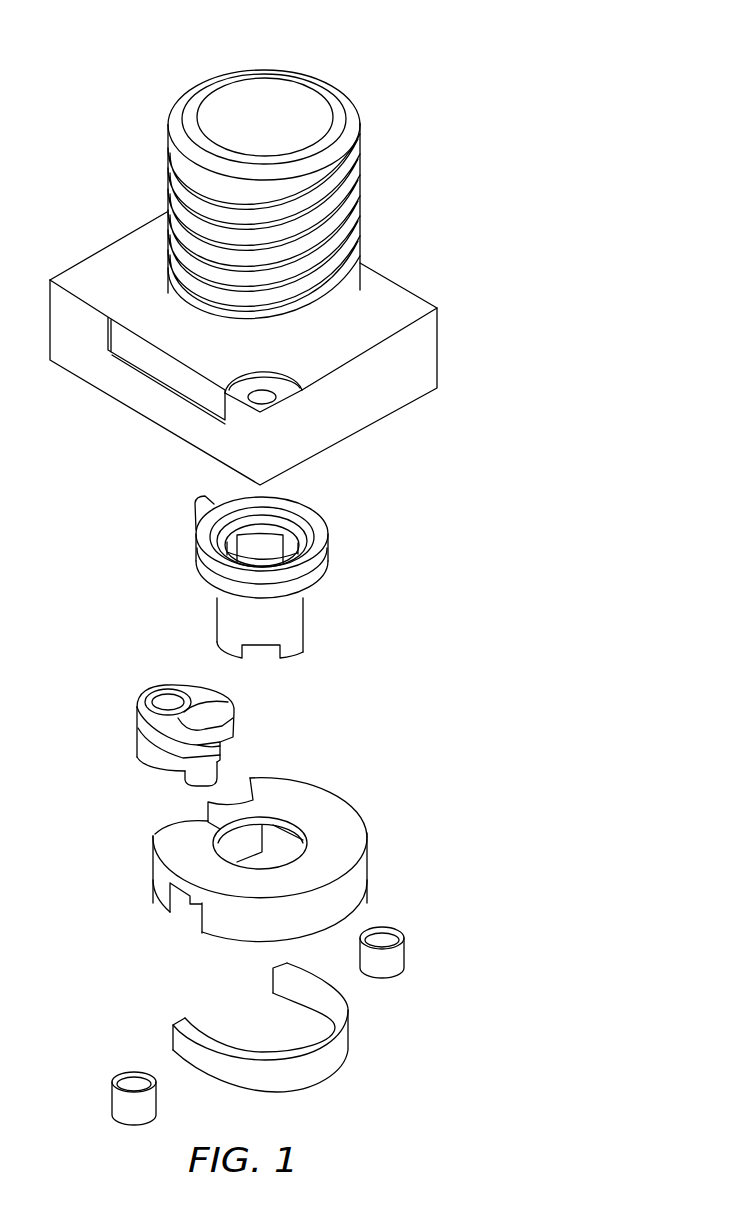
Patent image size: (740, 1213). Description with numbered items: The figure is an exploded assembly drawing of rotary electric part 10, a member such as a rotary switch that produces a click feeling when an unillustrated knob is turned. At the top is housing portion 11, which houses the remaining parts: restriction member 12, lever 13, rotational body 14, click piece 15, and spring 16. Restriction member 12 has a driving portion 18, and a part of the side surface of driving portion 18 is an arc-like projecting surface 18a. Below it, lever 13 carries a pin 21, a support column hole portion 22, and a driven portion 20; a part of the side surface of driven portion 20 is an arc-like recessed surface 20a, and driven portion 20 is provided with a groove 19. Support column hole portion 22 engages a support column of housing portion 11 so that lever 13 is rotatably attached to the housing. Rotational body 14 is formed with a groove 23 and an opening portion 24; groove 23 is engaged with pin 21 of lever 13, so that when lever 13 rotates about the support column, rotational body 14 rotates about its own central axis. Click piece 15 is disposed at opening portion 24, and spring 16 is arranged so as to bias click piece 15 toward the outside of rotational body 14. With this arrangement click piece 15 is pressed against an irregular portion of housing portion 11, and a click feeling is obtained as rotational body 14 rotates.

The rotary electric part 10 is at (402, 38).
The housing portion 11 is at (83, 272).
The restriction member 12 is at (279, 577).
The lever 13 is at (187, 720).
The rotational body 14 is at (235, 858).
The click piece 15 is at (380, 935).
The spring 16 is at (330, 1066).
The driving portion 18 is at (311, 592).
The arc-like projecting surface 18a is at (228, 595).
The groove 19 is at (229, 720).
The driven portion 20 is at (196, 730).
The arc-like recessed surface 20a is at (221, 750).
The pin 21 is at (197, 775).
The support column hole portion 22 is at (165, 702).
The groove 23 is at (206, 813).
The opening portion 24 is at (182, 895).